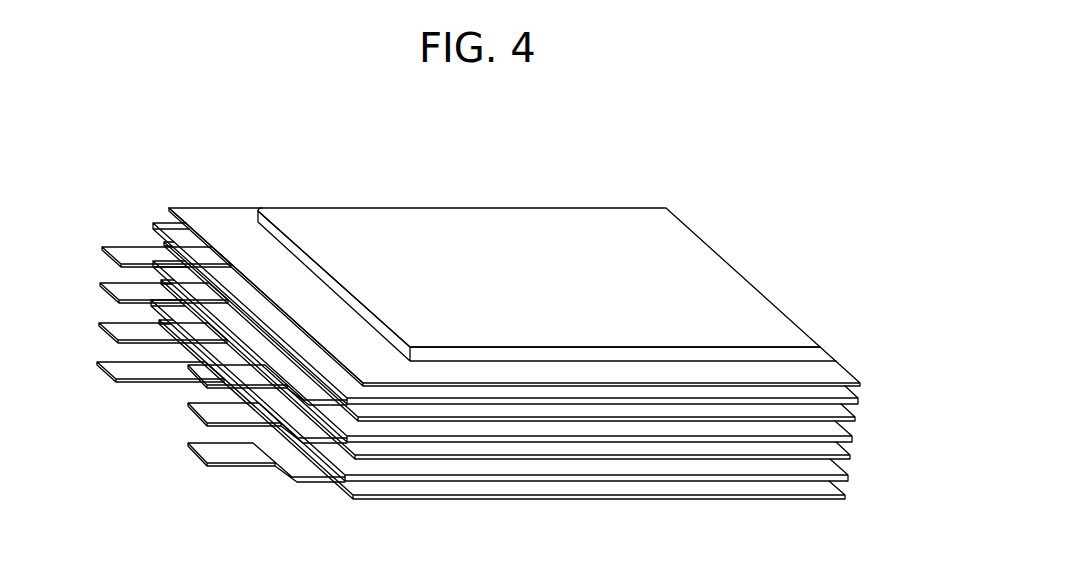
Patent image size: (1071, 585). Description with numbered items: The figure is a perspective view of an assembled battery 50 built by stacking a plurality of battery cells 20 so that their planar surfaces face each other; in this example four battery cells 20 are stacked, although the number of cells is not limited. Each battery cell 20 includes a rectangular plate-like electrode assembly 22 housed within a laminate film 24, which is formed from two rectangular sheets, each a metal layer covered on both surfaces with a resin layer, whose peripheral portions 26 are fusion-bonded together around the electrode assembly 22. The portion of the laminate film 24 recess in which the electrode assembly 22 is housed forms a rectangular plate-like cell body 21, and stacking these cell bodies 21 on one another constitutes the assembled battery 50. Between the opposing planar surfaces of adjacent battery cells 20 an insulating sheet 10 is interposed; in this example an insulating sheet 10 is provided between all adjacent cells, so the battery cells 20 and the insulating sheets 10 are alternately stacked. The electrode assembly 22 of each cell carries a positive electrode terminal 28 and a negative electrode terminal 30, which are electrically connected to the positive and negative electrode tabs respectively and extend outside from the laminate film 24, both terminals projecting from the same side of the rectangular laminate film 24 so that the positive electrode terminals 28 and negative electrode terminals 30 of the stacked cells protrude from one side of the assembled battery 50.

The assembled battery 50 is at (488, 121).
The battery cell 20 is at (546, 357).
The insulating sheet 10 is at (859, 403).
The cell body 21 is at (668, 304).
The electrode assembly 22 is at (534, 226).
The laminate film 24 is at (351, 230).
The peripheral portions 26 is at (243, 237).
The positive electrode terminal 28 is at (228, 408).
The negative electrode terminal 30 is at (118, 333).